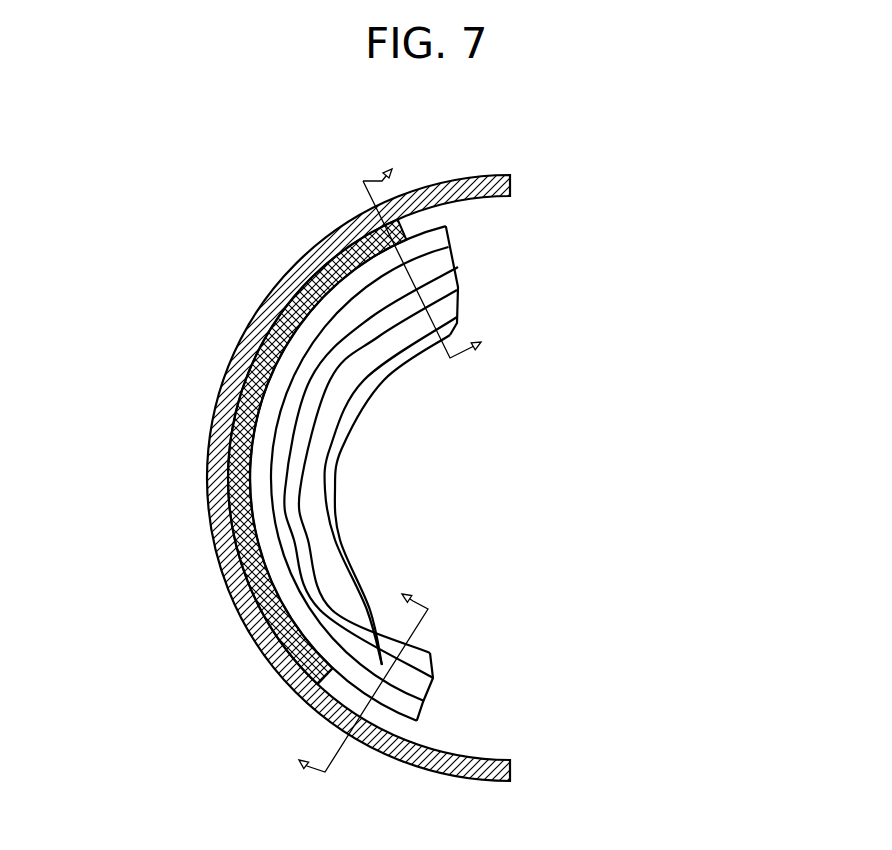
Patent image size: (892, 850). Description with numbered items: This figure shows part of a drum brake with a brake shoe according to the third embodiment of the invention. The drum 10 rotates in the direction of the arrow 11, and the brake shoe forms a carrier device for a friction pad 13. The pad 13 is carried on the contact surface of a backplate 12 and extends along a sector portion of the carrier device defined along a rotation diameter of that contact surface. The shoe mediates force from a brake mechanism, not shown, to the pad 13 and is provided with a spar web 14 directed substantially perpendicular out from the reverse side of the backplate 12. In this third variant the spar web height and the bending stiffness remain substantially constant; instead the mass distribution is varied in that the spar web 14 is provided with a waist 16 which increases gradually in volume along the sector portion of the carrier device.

The drum 10 is at (493, 758).
The arrow 11 is at (460, 142).
The backplate 12 is at (334, 497).
The friction pad 13 is at (405, 230).
The spar web 14 is at (433, 657).
The waist 16 is at (457, 273).